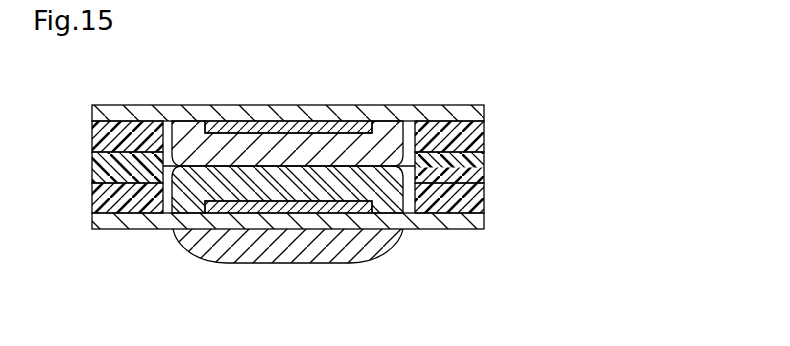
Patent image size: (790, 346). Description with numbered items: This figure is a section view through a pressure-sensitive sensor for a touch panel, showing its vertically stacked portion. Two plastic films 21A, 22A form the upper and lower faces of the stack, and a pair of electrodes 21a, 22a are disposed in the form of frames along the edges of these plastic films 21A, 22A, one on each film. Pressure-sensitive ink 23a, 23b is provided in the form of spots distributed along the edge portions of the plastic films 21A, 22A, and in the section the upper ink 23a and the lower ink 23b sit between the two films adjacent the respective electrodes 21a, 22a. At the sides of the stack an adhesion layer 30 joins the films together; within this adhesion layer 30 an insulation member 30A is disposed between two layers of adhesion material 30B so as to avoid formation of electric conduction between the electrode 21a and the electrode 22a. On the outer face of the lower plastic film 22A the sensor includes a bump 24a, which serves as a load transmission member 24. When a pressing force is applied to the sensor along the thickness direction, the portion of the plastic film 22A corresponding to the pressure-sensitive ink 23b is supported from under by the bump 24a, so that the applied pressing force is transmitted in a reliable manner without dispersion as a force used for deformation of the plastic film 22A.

The plastic film 21A is at (175, 106).
The electrode 21a is at (291, 127).
The plastic film 22A is at (137, 229).
The electrode 22a is at (277, 207).
The pressure-sensitive ink 23a is at (388, 123).
The pressure-sensitive ink 23b is at (388, 206).
The bump 24a is at (207, 257).
The load transmission member 24 is at (281, 275).
The adhesion layer 30 is at (375, 167).
The insulation member 30A is at (482, 172).
The adhesion material 30B is at (482, 128).